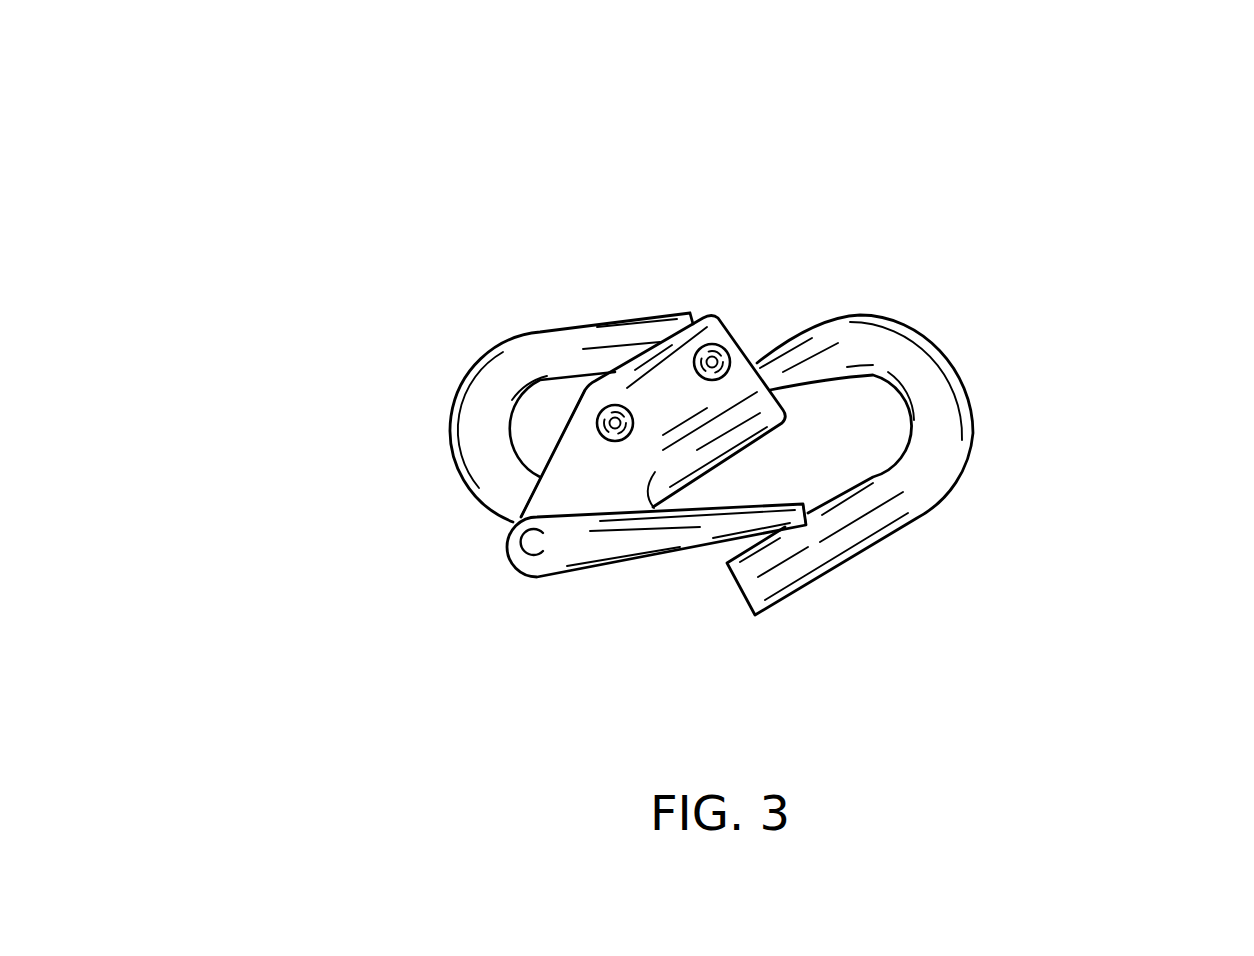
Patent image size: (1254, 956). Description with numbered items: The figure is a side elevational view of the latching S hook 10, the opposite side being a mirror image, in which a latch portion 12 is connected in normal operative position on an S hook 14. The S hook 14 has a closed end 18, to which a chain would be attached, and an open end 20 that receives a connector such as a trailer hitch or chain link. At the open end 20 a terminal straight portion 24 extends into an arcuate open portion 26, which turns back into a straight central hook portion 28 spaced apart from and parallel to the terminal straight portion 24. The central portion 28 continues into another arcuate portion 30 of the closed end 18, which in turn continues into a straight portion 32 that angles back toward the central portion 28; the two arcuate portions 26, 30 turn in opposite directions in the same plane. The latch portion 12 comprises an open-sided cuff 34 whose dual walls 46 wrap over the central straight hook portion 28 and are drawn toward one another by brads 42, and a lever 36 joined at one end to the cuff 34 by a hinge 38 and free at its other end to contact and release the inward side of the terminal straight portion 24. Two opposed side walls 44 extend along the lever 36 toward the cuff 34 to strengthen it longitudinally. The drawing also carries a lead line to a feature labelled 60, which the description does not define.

The latching S hook 10 is at (785, 207).
The latch portion 12 is at (583, 585).
The S hook 14 is at (930, 290).
The closed end 18 is at (458, 365).
The open end 20 is at (1000, 433).
The terminal straight portion 24 is at (873, 537).
The arcuate open portion 26 is at (937, 375).
The straight central hook portion 28 is at (782, 370).
The arcuate portion 30 is at (478, 425).
The straight portion 32 is at (598, 332).
The cuff 34 is at (633, 447).
The lever 36 is at (655, 533).
The hinge 38 is at (518, 550).
The brads 42 is at (612, 410).
The side walls 44 is at (747, 507).
The dual walls 46 is at (540, 350).
The eye inner wall 60 is at (560, 447).